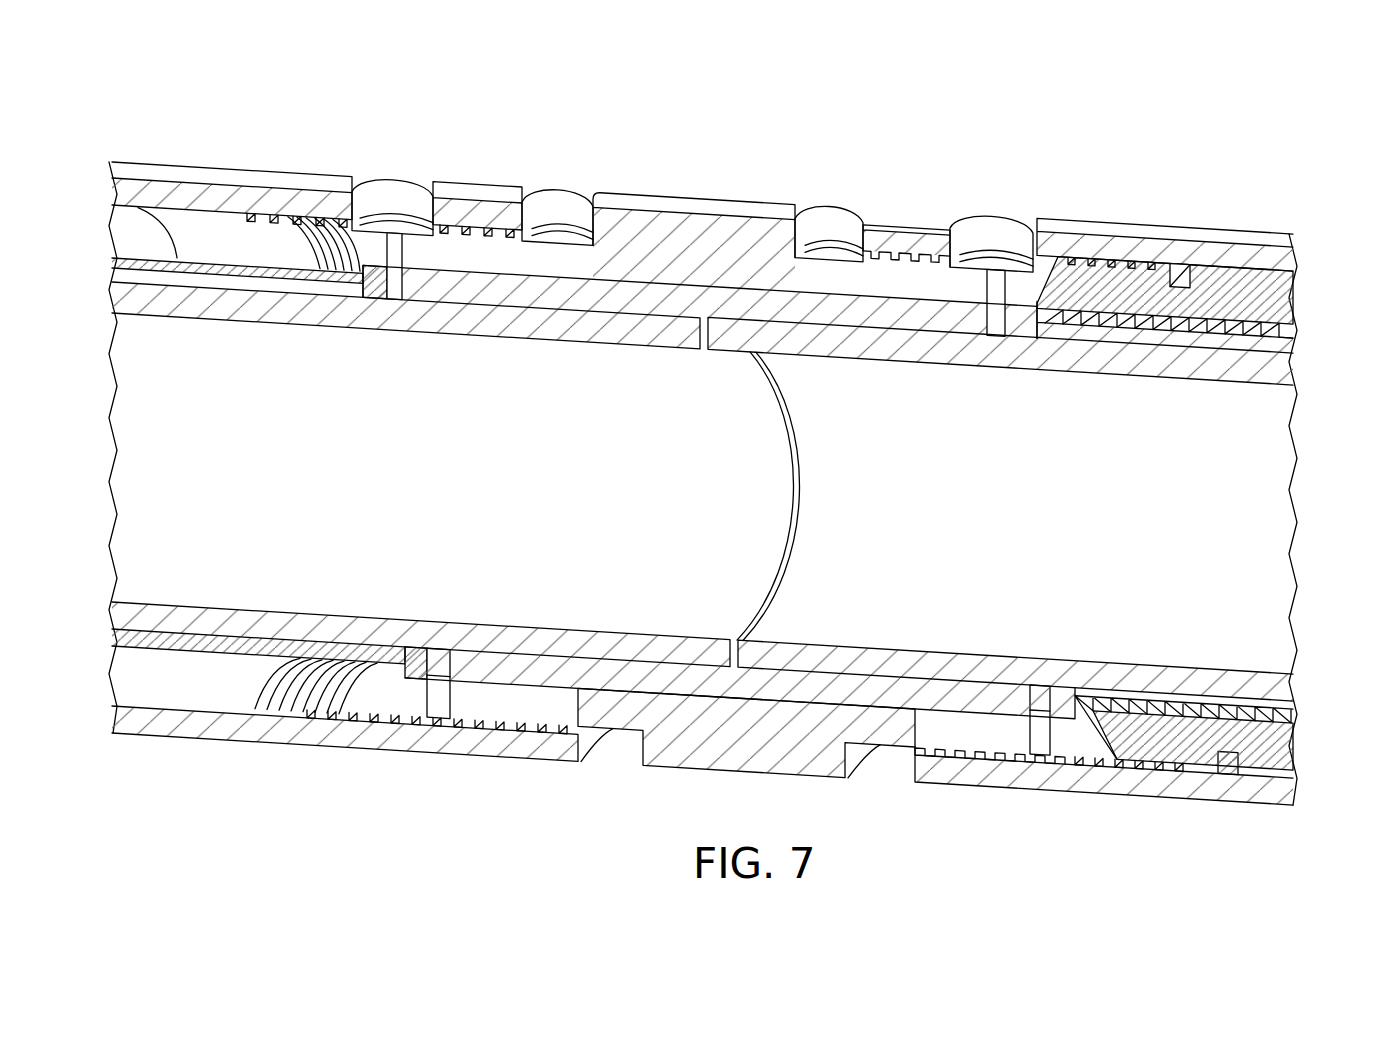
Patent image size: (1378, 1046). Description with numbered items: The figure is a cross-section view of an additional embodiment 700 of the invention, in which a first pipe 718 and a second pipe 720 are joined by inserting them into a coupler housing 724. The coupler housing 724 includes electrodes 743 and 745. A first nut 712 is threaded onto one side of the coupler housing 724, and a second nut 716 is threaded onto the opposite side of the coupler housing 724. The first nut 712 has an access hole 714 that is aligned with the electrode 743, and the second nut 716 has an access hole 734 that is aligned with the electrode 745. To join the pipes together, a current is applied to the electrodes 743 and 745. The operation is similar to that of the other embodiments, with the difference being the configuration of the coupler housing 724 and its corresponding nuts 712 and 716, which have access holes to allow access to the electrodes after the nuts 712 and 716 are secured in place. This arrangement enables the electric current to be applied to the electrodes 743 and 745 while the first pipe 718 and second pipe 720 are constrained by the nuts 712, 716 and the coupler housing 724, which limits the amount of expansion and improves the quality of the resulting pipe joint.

The additional embodiment 700 is at (100, 133).
The first nut 712 is at (236, 198).
The access hole 714 is at (397, 190).
The second nut 716 is at (1187, 250).
The first pipe 718 is at (125, 388).
The second pipe 720 is at (1285, 457).
The coupler housing 724 is at (688, 222).
The access hole 734 is at (1010, 222).
The electrode 743 is at (393, 236).
The electrode 745 is at (993, 275).